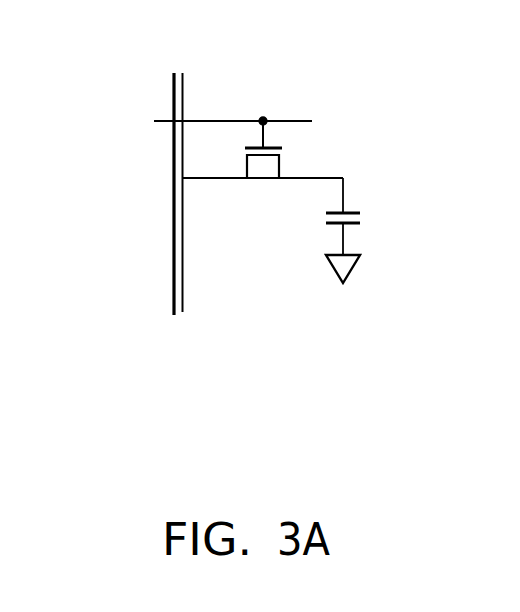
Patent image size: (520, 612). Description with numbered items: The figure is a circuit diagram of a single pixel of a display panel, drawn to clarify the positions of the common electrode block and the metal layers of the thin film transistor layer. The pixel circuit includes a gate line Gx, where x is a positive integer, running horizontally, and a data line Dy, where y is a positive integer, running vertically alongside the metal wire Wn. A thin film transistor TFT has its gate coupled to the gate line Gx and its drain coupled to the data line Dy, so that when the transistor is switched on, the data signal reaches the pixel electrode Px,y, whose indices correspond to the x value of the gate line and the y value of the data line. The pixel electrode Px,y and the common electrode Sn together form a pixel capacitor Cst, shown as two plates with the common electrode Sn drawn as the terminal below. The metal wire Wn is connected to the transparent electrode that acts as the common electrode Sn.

The metal wire Wn is at (173, 100).
The data line Dy is at (184, 303).
The gate line Gx is at (263, 118).
The thin film transistor TFT is at (261, 190).
The pixel electrode Px,y is at (343, 177).
The pixel capacitor Cst is at (362, 218).
The common electrode Sn is at (343, 270).